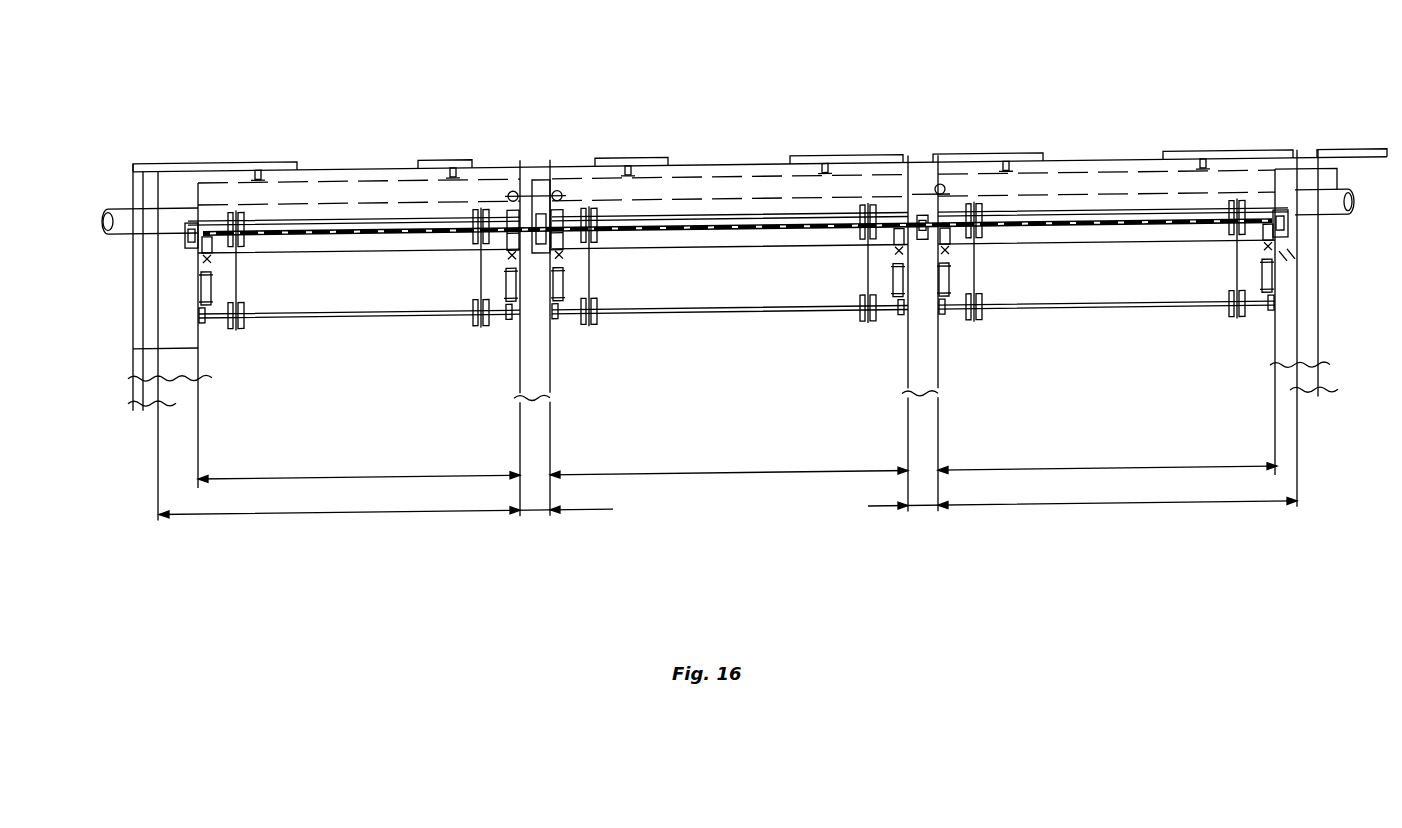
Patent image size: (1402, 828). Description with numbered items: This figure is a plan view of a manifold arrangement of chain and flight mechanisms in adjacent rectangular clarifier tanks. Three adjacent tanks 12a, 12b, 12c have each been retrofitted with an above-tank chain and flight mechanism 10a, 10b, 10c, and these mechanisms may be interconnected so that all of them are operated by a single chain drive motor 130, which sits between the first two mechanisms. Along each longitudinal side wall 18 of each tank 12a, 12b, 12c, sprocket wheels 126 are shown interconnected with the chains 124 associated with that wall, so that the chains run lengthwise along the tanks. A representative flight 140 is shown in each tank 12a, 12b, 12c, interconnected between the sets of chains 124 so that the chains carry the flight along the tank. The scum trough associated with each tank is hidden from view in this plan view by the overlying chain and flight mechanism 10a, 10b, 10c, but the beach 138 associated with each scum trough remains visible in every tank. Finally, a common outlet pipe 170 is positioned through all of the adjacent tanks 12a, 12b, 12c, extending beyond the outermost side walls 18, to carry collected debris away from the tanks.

The chain and flight mechanism 10a is at (357, 216).
The chain and flight mechanism 10b is at (733, 208).
The chain and flight mechanism 10c is at (1121, 200).
The tank 12a is at (365, 458).
The tank 12b is at (745, 443).
The tank 12c is at (1115, 447).
The longitudinal side wall 18 is at (200, 417).
The chain 124 is at (240, 272).
The sprocket wheel 126 is at (245, 333).
The chain drive motor 130 is at (546, 192).
The beach 138 is at (408, 242).
The flight 140 is at (378, 325).
The common outlet pipe 170 is at (118, 216).